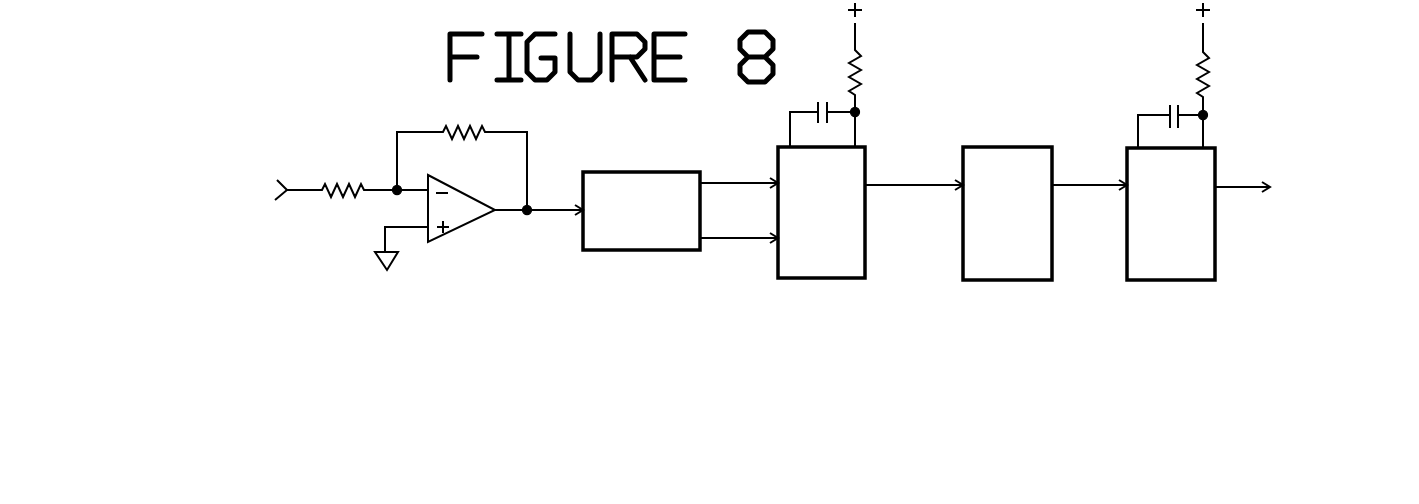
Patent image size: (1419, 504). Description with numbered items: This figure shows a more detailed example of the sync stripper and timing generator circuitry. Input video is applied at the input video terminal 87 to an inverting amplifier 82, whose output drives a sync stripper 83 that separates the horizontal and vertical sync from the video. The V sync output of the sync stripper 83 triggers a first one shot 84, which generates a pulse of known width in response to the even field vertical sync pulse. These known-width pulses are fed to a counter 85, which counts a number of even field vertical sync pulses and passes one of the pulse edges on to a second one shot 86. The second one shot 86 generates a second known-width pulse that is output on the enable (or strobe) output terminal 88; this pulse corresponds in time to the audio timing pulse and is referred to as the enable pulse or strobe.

The inverting amplifier 82 is at (465, 230).
The sync stripper 83 is at (637, 168).
The one shot 84 is at (775, 158).
The counter 85 is at (1003, 142).
The one shot 86 is at (1222, 157).
The input video terminal 87 is at (297, 185).
The enable (or strobe) output terminal 88 is at (1245, 192).